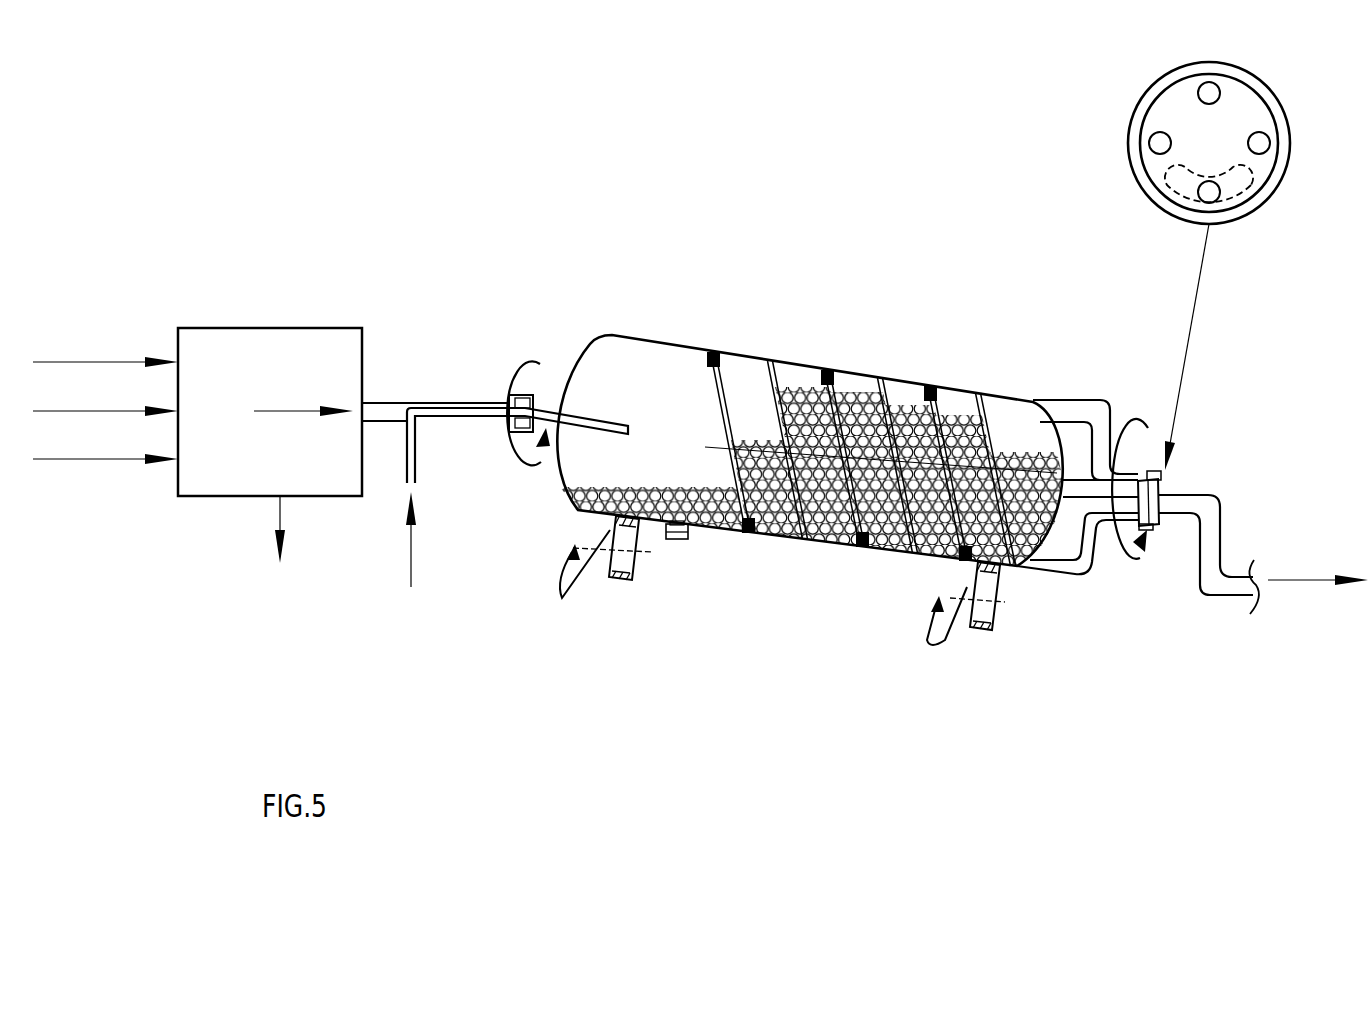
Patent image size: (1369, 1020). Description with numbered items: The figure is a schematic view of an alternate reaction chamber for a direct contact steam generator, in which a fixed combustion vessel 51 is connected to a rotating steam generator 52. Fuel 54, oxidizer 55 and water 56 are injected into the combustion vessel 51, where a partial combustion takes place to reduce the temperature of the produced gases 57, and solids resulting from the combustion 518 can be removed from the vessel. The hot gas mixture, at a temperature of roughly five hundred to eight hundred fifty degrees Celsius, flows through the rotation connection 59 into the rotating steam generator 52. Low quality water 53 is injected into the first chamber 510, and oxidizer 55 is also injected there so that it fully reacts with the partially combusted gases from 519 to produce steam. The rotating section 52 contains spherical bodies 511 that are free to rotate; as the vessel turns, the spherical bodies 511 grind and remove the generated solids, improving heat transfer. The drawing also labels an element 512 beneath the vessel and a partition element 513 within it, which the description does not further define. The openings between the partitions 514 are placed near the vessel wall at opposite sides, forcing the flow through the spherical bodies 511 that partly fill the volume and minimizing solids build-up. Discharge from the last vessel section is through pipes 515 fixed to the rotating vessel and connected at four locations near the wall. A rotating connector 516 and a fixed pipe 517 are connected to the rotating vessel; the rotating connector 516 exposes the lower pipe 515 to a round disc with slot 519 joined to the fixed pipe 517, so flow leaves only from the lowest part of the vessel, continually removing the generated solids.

The fixed combustion vessel 51 is at (243, 328).
The rotating steam generator 52 is at (665, 367).
The low quality water 53 is at (486, 497).
The fuel 54 is at (105, 342).
The oxidizer 55 is at (105, 392).
The water 56 is at (105, 441).
The produced gases 57 is at (375, 410).
The rotation connection 59 is at (512, 478).
The first chamber 510 is at (568, 467).
The spherical bodies 511 is at (898, 397).
The clamp 512 is at (683, 540).
The partition screens 513 is at (743, 382).
The partitions 514 is at (832, 365).
The pipes 515 is at (1098, 418).
The rotating connector 516 is at (1160, 490).
The fixed pipe 517 is at (1263, 554).
The solids resulting from the combustion 518 is at (251, 545).
The round disc with slot 519 is at (298, 392).